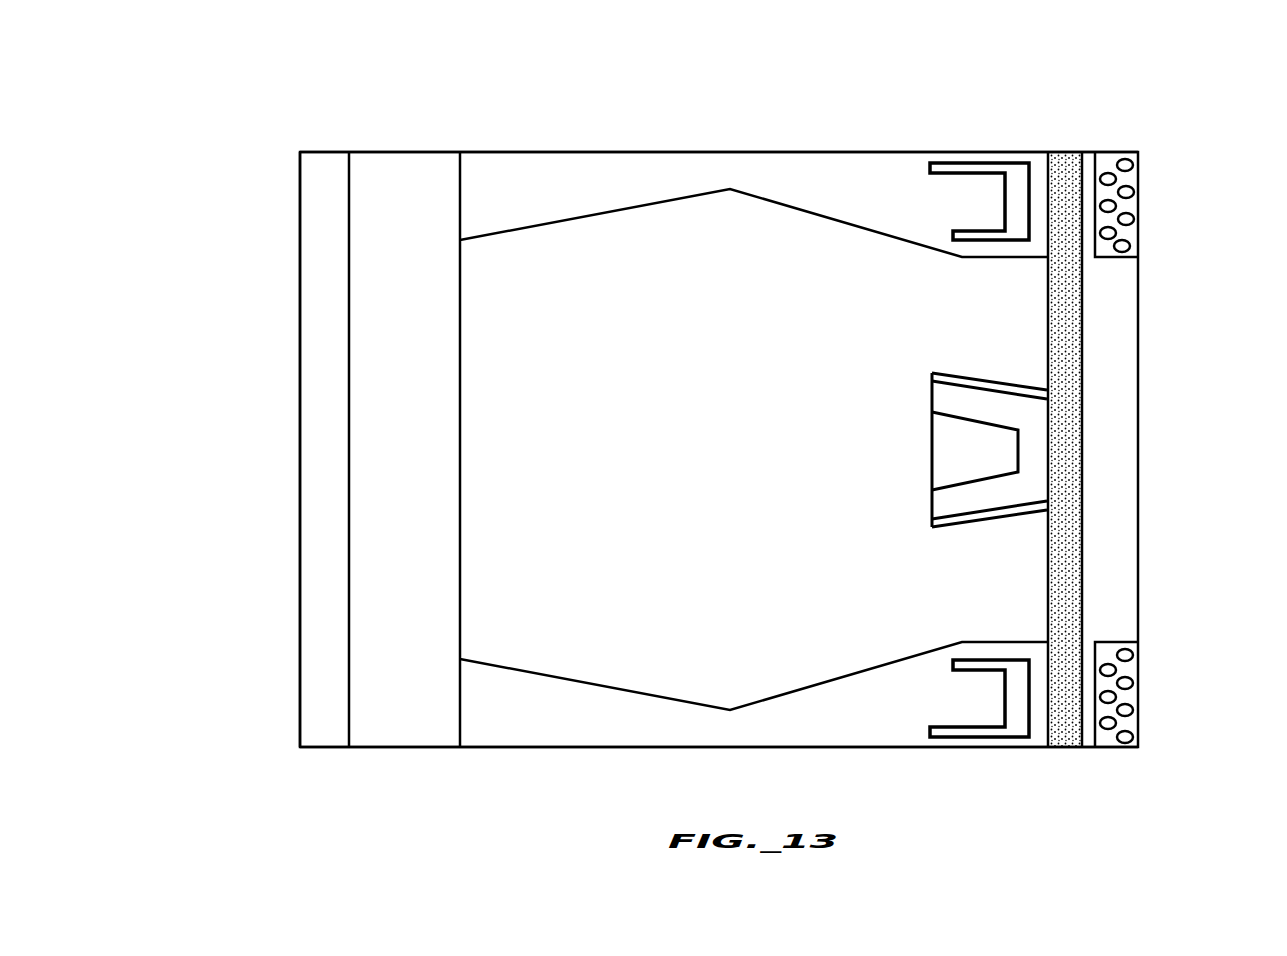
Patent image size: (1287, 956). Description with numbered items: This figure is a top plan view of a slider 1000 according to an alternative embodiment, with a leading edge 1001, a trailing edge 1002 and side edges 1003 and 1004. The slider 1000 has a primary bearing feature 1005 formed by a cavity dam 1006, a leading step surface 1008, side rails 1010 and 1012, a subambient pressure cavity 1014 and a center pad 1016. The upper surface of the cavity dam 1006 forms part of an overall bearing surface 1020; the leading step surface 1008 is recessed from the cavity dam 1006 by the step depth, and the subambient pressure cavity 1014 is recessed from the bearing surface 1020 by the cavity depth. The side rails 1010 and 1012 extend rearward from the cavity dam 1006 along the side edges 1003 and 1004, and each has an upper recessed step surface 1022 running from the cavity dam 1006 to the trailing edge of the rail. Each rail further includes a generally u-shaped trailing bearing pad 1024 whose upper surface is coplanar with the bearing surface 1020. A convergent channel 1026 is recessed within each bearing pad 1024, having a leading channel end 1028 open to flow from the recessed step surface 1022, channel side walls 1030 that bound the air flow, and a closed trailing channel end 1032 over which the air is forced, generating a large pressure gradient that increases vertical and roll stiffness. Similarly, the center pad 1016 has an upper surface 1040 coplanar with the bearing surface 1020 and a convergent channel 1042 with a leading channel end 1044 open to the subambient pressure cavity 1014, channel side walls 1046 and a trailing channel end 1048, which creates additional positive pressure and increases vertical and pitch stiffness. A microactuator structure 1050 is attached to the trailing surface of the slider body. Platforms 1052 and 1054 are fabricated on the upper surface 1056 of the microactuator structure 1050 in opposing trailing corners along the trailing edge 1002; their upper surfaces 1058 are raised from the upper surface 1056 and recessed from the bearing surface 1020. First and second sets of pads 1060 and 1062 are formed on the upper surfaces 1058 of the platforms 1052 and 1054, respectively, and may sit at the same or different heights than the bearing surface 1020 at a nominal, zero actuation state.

The slider 1000 is at (292, 134).
The leading edge 1001 is at (296, 682).
The trailing edge 1002 is at (1140, 535).
The side edge 1003 is at (387, 152).
The side edge 1004 is at (415, 748).
The primary bearing feature 1005 is at (752, 118).
The cavity dam 1006 is at (355, 292).
The leading step surface 1008 is at (310, 448).
The side rail 1010 is at (500, 174).
The side rail 1012 is at (568, 728).
The subambient pressure cavity 1014 is at (683, 438).
The center pad 1016 is at (938, 368).
The bearing surface 1020 is at (367, 226).
The recessed step surface 1022 is at (615, 152).
The trailing bearing pad 1024 is at (938, 149).
The convergent channel 1026 is at (970, 192).
The leading channel end 1028 is at (930, 212).
The channel side walls 1030 is at (985, 172).
The trailing channel end 1032 is at (1003, 205).
The upper surface 1040 is at (943, 500).
The convergent channel 1042 is at (951, 444).
The leading channel end 1044 is at (932, 453).
The channel side walls 1046 is at (958, 408).
The trailing channel end 1048 is at (1018, 452).
The microactuator structure 1050 is at (1138, 137).
The platform 1052 is at (1141, 141).
The platform 1054 is at (1113, 753).
The upper surface 1056 is at (1120, 397).
The upper surfaces 1058 is at (1130, 254).
The first set of pads 1060 is at (1130, 246).
The second set of pads 1062 is at (1130, 712).